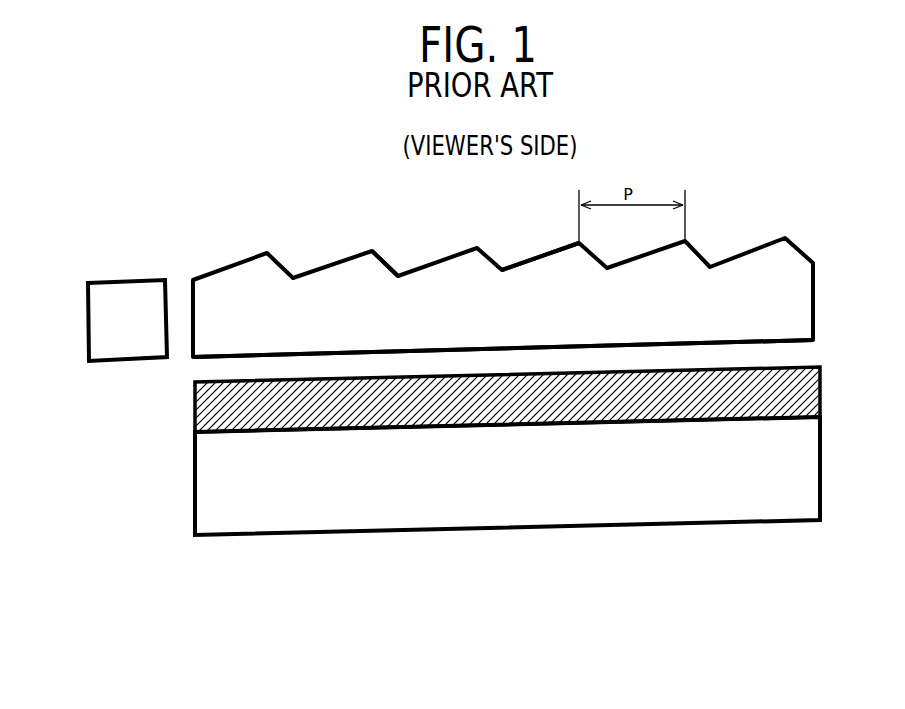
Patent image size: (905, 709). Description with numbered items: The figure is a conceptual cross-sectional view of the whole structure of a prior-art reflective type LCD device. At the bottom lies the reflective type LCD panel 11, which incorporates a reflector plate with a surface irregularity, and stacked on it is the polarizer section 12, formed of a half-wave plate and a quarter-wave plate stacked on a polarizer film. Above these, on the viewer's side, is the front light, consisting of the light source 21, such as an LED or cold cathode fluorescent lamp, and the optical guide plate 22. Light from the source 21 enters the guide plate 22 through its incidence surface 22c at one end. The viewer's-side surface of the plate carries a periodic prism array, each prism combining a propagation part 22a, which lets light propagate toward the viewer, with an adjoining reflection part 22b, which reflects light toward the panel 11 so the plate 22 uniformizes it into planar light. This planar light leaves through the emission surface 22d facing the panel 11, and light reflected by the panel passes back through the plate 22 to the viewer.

The reflective type LCD panel 11 is at (280, 512).
The polarizer section 12 is at (195, 417).
The light source 21 is at (140, 350).
The optical guide plate 22 is at (241, 239).
The propagation parts 22a is at (538, 257).
The reflection parts 22b is at (390, 263).
The incidence surface 22c is at (191, 303).
The emission surface 22d is at (728, 342).